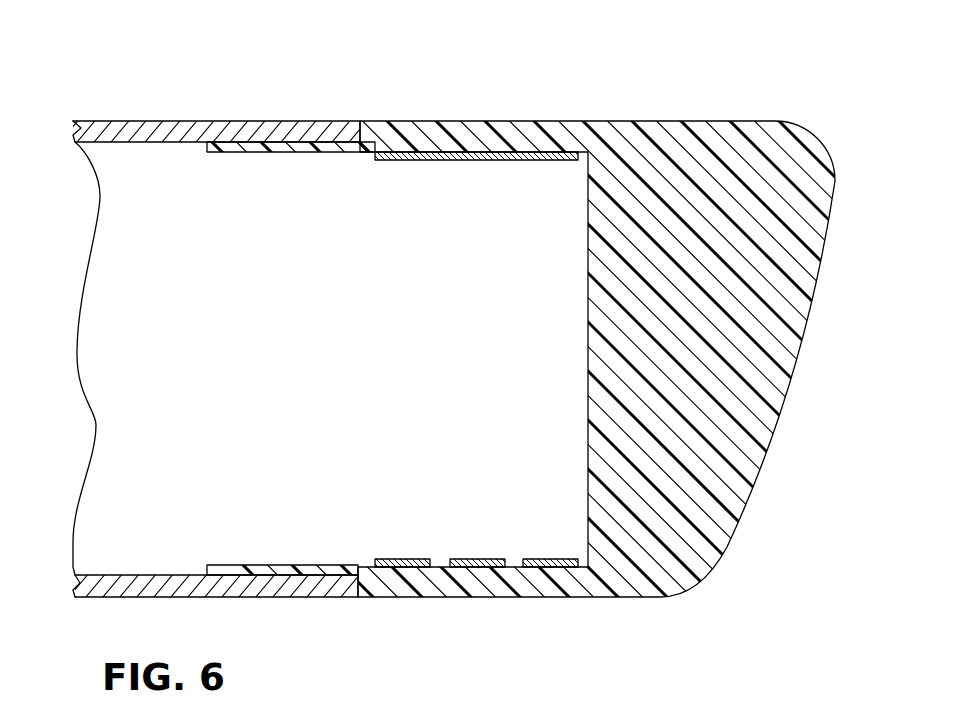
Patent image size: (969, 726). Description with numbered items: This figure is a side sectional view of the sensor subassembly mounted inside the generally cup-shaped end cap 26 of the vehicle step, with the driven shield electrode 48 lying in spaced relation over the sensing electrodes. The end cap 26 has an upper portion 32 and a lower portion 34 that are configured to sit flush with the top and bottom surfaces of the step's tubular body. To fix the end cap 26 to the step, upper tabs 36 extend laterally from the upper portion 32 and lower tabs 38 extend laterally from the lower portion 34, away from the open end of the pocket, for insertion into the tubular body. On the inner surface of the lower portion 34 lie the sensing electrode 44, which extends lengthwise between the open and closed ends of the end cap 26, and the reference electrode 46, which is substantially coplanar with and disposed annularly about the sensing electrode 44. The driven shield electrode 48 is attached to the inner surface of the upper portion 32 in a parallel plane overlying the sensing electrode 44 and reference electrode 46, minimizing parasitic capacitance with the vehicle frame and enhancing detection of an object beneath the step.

The end cap 26 is at (722, 97).
The upper portion 32 is at (522, 121).
The lower portion 34 is at (533, 598).
The upper tabs 36 is at (296, 143).
The lower tabs 38 is at (253, 572).
The sensing electrode 44 is at (480, 558).
The reference electrode 46 is at (410, 558).
The driven shield electrode 48 is at (484, 161).